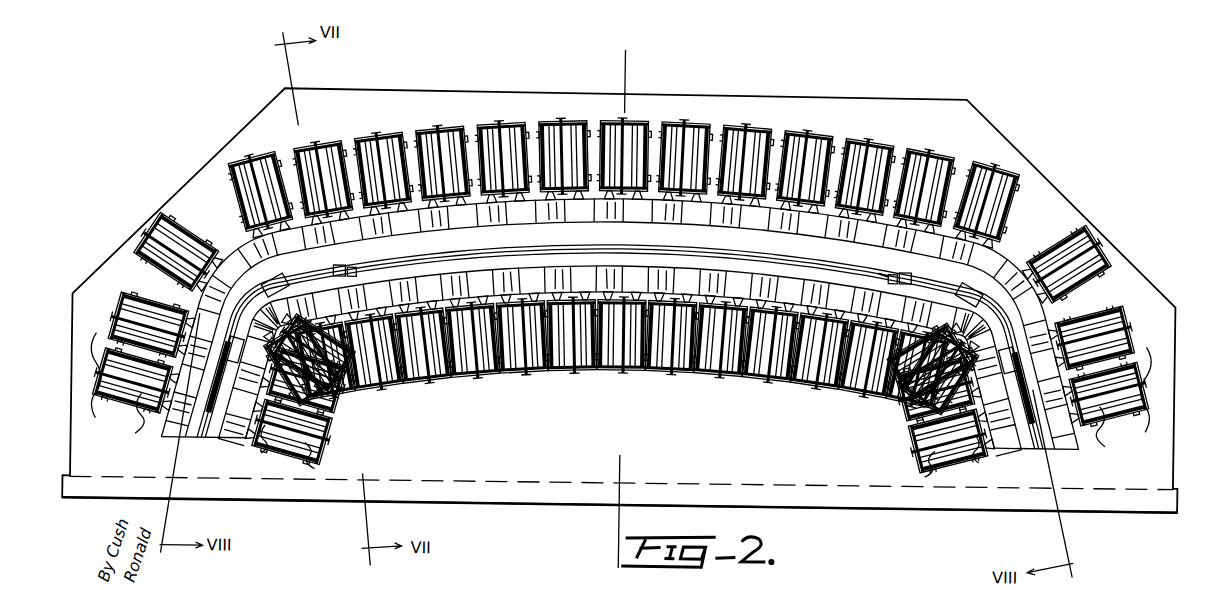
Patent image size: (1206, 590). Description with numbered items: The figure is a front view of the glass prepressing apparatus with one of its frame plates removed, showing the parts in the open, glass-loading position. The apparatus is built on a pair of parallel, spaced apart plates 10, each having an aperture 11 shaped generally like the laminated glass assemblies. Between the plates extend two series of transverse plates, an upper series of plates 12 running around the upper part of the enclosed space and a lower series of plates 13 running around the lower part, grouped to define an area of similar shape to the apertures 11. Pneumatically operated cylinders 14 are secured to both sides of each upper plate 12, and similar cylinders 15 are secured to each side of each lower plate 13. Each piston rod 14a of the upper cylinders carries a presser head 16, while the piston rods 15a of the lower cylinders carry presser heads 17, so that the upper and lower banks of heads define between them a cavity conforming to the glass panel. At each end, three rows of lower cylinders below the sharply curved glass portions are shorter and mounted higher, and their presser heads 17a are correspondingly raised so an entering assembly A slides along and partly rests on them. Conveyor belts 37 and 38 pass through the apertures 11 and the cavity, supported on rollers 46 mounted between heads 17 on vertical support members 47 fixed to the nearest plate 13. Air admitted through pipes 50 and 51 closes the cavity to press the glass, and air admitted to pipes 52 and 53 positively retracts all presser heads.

The plate 10 is at (965, 123).
The aperture 11 is at (987, 277).
The transverse plate 12 is at (503, 137).
The transverse plate 13 is at (930, 413).
The pneumatically operated cylinder 14 is at (490, 137).
The piston rod 14a is at (703, 191).
The pneumatically operated cylinder 15 is at (917, 446).
The piston rod 15a is at (264, 445).
The presser head 16 is at (719, 222).
The presser head 17 is at (835, 290).
The presser head 17a is at (930, 301).
The conveyor belt 37 is at (905, 278).
The conveyor belt 38 is at (343, 279).
The roller 46 is at (897, 279).
The vertical support member 47 is at (898, 286).
The air supply pipe 50 is at (1147, 408).
The air supply pipe 51 is at (933, 476).
The air supply pipe 52 is at (1095, 425).
The air supply pipe 53 is at (962, 435).
The glass assembly A is at (882, 266).